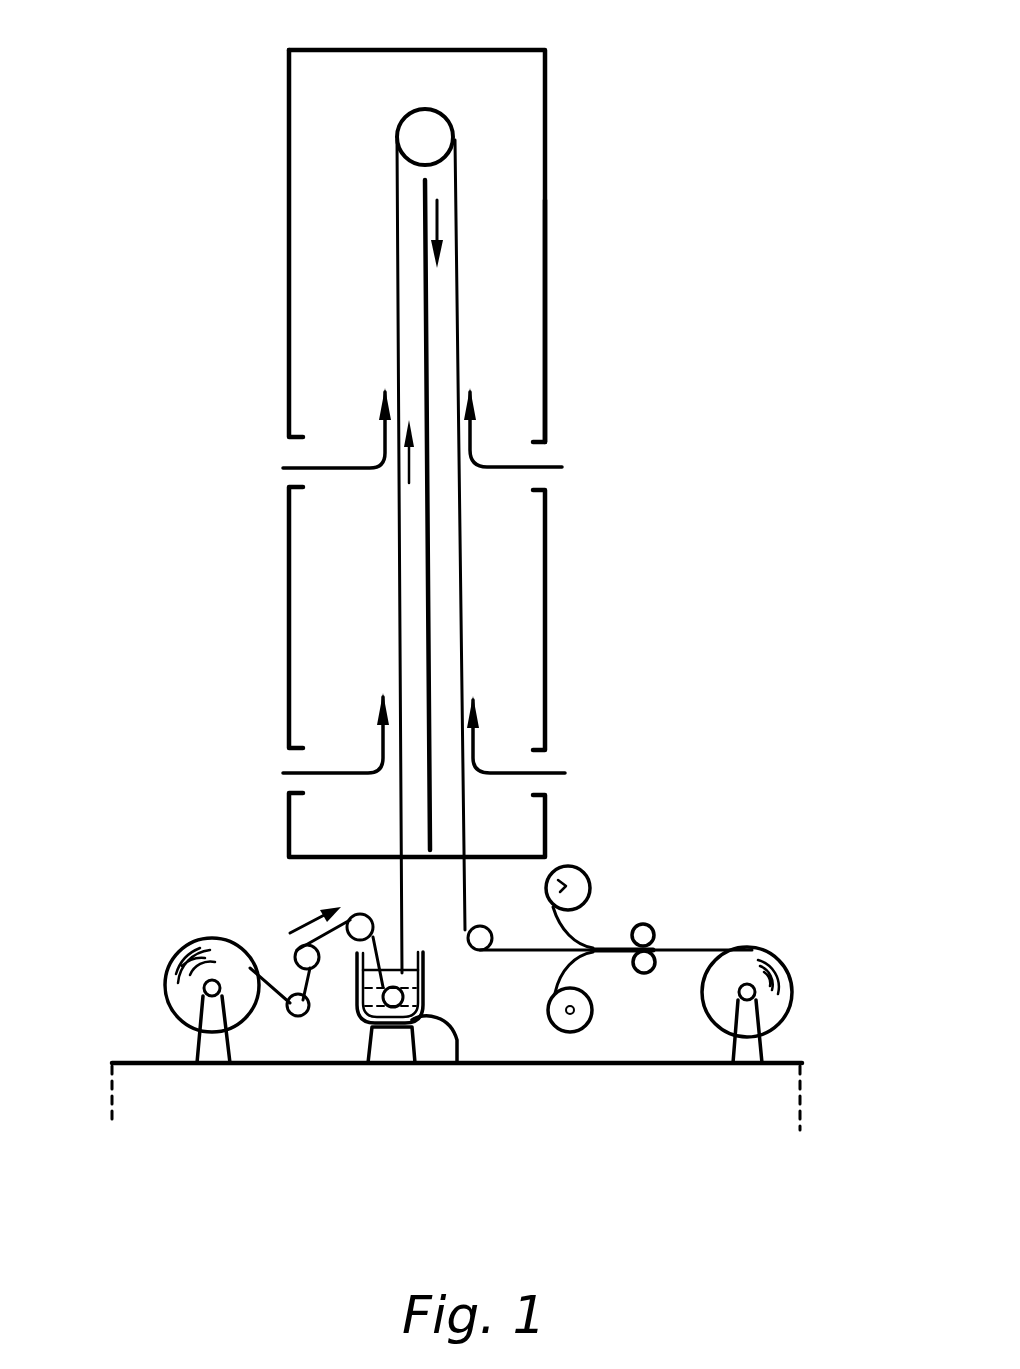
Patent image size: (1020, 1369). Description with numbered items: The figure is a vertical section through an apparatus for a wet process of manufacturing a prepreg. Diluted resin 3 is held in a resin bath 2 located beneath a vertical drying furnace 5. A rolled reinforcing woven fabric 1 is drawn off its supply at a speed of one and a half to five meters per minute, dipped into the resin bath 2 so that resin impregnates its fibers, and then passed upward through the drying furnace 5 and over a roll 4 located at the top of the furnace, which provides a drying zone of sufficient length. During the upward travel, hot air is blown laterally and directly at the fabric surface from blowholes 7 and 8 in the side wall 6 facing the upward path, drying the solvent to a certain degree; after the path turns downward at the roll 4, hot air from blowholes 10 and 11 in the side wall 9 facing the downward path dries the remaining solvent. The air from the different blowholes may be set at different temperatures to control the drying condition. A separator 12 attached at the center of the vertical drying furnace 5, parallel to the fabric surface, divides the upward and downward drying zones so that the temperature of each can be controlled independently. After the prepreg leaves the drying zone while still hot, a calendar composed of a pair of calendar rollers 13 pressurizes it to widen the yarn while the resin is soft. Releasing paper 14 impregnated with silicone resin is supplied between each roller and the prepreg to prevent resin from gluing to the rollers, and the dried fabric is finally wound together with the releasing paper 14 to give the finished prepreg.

The reinforcing woven fabric 1 is at (170, 1005).
The resin bath 2 is at (427, 960).
The diluted resin 3 is at (440, 1065).
The roll 4 is at (417, 128).
The vertical drying furnace 5 is at (547, 130).
The wall 6 is at (289, 382).
The hot air blowhole 7 is at (290, 757).
The hot air blowhole 8 is at (297, 455).
The wall 9 is at (547, 290).
The hot air blowhole 10 is at (540, 478).
The hot air blowhole 11 is at (547, 787).
The separator 12 is at (422, 290).
The calendar roller 13 is at (653, 932).
The releasing paper 14 is at (590, 883).